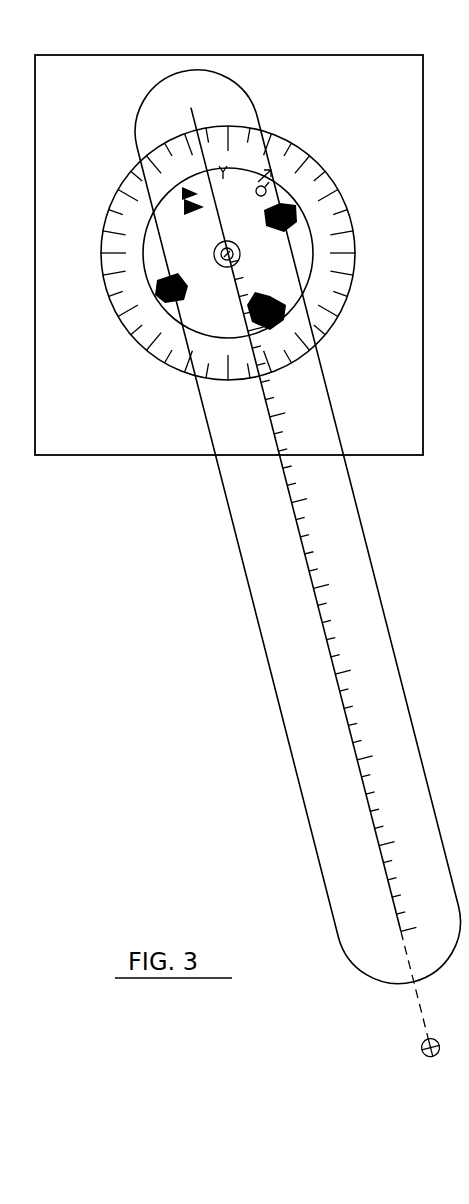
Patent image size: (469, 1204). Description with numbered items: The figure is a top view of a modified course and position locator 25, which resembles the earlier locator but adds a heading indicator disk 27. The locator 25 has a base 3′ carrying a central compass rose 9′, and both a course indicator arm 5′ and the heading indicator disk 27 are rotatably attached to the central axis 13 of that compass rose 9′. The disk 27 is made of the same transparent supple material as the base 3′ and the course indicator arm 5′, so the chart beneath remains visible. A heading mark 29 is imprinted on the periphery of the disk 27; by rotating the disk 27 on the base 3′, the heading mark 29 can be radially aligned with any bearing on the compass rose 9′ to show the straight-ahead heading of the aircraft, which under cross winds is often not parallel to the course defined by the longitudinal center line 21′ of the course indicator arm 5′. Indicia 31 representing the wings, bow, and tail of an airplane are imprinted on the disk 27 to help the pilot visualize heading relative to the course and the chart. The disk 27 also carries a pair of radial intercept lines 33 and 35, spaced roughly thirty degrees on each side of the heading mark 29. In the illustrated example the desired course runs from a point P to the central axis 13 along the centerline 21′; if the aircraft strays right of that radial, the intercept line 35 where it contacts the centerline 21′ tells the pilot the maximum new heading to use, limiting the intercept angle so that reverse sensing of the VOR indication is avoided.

The base 3′ is at (382, 458).
The course indicator arm 5′ is at (298, 782).
The compass rose 9′ is at (367, 311).
The central axis 13 is at (245, 189).
The longitudinal center line 21′ is at (380, 790).
The course and position locator 25 is at (115, 472).
The heading indicator disk 27 is at (320, 234).
The heading mark 29 is at (162, 218).
The indicia 31 is at (312, 243).
The radial intercept line 33 is at (103, 220).
The radial intercept line 35 is at (228, 241).
The point P is at (423, 1043).